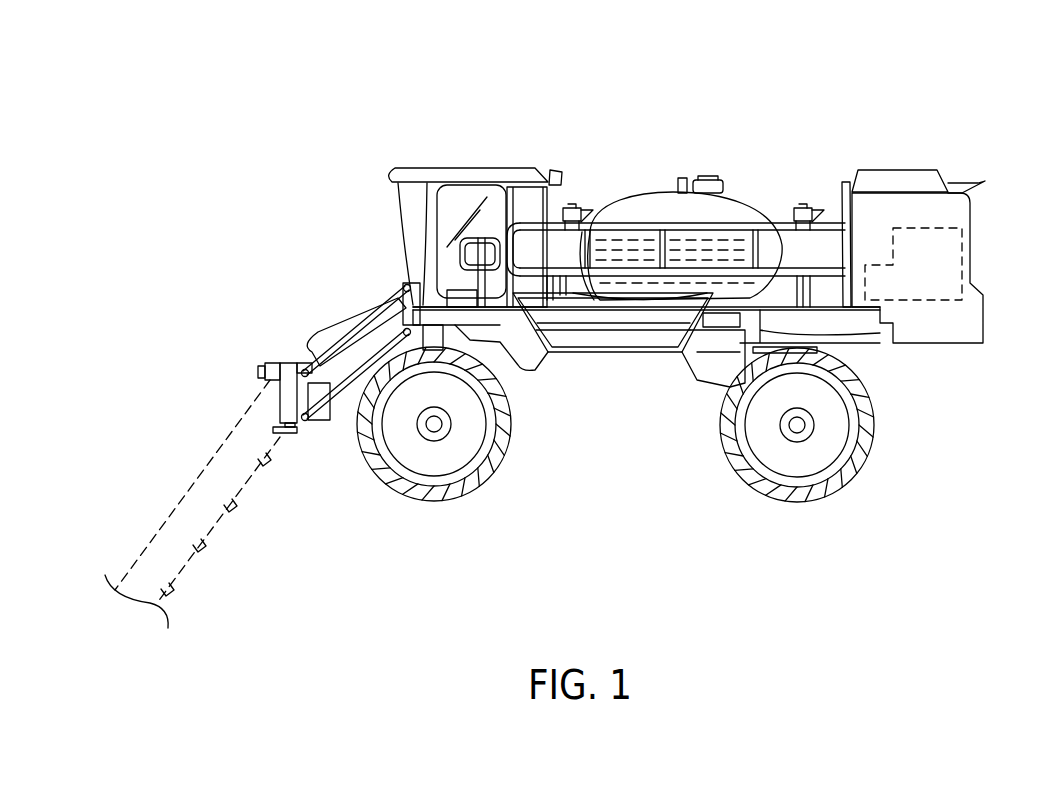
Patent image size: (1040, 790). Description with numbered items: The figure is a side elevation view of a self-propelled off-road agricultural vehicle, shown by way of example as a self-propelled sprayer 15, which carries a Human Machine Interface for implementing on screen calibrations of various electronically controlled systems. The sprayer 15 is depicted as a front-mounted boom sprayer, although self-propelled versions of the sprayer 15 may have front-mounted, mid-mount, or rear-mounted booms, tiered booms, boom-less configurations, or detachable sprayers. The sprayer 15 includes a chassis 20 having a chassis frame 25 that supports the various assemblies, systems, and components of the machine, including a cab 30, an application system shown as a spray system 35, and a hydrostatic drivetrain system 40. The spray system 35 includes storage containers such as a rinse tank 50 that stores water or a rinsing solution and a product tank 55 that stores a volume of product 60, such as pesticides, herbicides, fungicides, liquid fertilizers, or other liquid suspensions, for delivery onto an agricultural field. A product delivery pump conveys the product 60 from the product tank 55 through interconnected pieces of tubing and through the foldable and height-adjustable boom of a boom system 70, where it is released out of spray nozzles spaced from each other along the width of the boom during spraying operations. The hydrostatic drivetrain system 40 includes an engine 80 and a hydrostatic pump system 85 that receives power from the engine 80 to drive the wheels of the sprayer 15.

The self-propelled sprayer 15 is at (733, 62).
The chassis 20 is at (637, 356).
The chassis frame 25 is at (700, 362).
The cab 30 is at (474, 164).
The spray system 35 is at (770, 172).
The hydrostatic drivetrain system 40 is at (903, 318).
The rinse tank 50 is at (806, 210).
The product tank 55 is at (636, 170).
The product 60 is at (607, 235).
The boom system 70 is at (146, 507).
The engine 80 is at (938, 250).
The hydrostatic pump system 85 is at (876, 280).